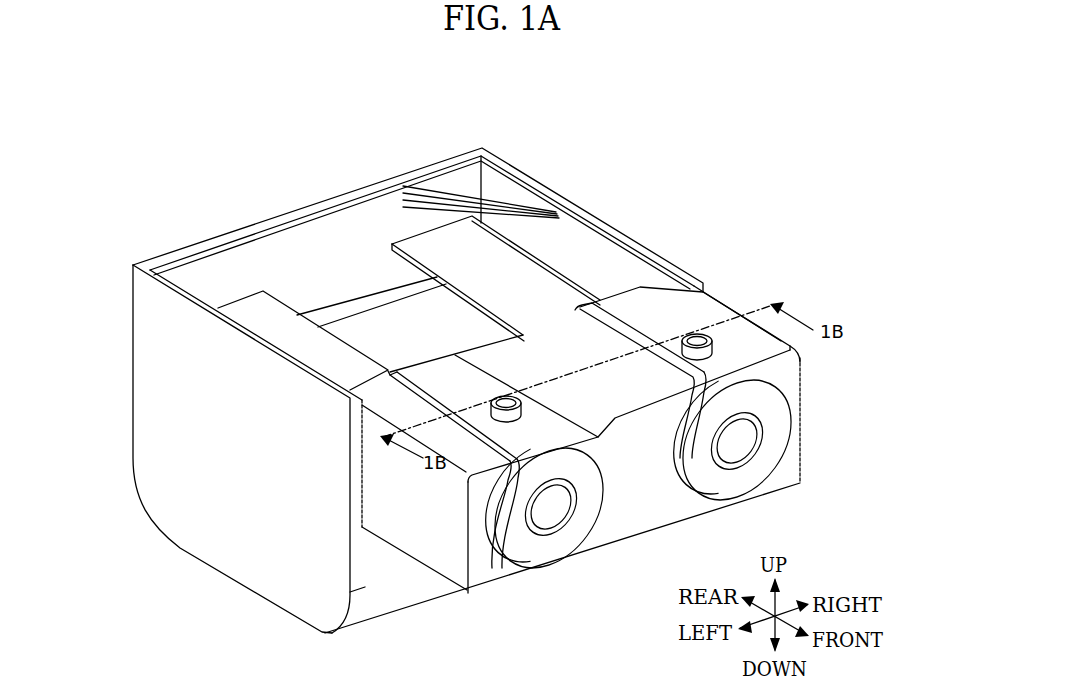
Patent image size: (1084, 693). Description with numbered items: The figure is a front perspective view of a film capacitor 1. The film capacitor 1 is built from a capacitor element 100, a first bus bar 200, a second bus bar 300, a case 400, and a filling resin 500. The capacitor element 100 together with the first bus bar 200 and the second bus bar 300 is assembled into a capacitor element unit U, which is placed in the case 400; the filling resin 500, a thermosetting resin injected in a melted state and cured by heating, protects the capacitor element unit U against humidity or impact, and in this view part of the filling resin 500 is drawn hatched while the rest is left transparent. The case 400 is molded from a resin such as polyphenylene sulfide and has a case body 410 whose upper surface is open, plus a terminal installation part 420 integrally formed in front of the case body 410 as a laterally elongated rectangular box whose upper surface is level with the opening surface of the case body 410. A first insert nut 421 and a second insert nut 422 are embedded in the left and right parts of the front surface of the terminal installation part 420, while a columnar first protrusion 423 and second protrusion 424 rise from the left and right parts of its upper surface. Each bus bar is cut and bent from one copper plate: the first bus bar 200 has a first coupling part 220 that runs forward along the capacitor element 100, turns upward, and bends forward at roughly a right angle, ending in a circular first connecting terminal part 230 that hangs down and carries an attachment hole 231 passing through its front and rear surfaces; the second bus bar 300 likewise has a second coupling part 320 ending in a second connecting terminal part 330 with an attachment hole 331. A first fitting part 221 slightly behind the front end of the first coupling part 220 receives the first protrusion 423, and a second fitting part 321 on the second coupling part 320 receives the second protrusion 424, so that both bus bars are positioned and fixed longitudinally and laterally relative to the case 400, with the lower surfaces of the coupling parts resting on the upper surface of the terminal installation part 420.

The film capacitor 1 is at (690, 245).
The capacitor element 100 is at (385, 322).
The first bus bar 200 is at (248, 313).
The first coupling part 220 is at (452, 380).
The first fitting part 221 is at (465, 460).
The first connecting terminal part 230 is at (570, 535).
The attachment hole 231 is at (572, 500).
The second bus bar 300 is at (445, 242).
The second coupling part 320 is at (623, 317).
The second fitting part 321 is at (688, 382).
The second connecting terminal part 330 is at (760, 472).
The attachment hole 331 is at (758, 430).
The case 400 is at (603, 213).
The case body 410 is at (195, 527).
The terminal installation part 420 is at (384, 474).
The first insert nut 421 is at (532, 527).
The second insert nut 422 is at (723, 473).
The first protrusion 423 is at (507, 393).
The second protrusion 424 is at (697, 333).
The filling resin 500 is at (497, 197).
The capacitor element unit U is at (320, 298).